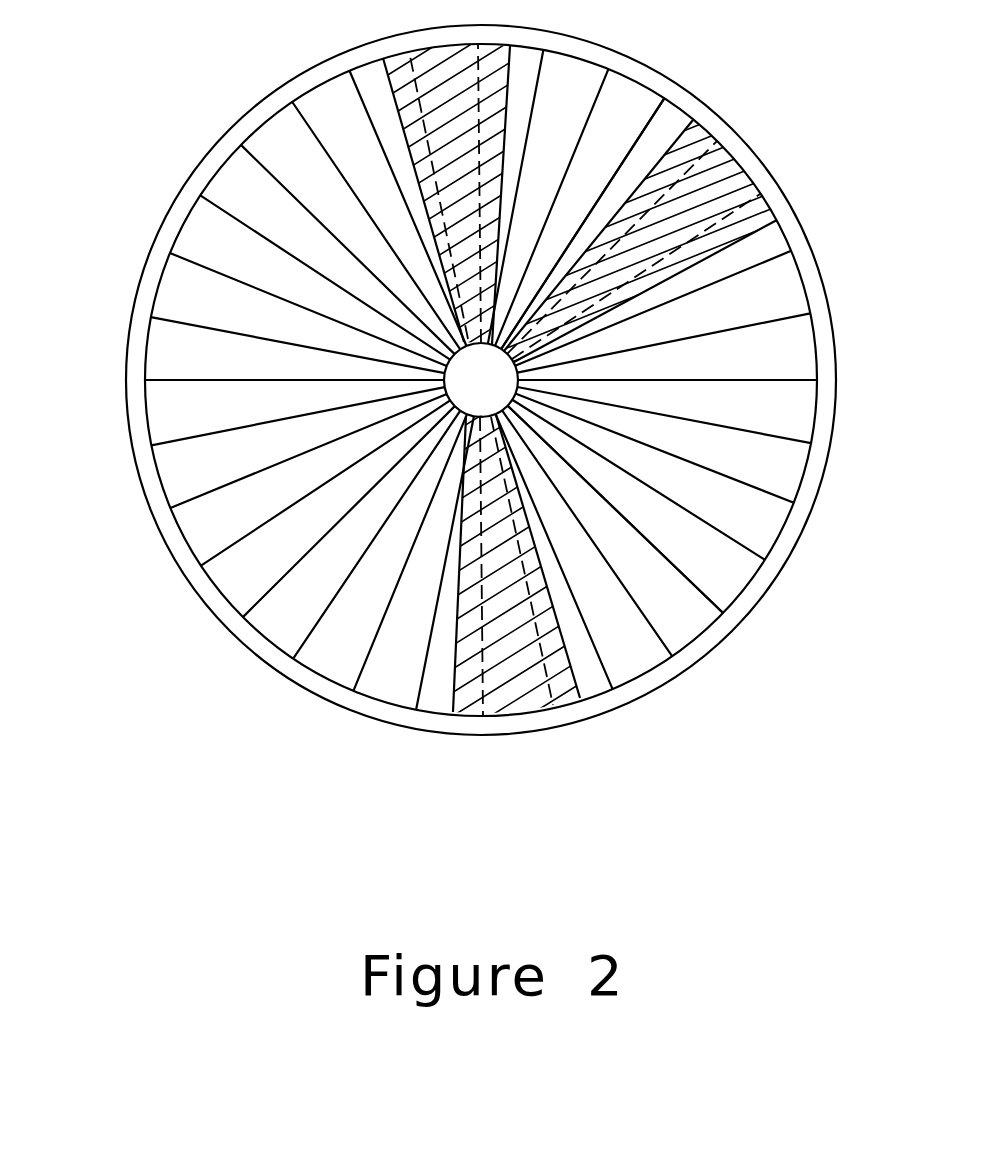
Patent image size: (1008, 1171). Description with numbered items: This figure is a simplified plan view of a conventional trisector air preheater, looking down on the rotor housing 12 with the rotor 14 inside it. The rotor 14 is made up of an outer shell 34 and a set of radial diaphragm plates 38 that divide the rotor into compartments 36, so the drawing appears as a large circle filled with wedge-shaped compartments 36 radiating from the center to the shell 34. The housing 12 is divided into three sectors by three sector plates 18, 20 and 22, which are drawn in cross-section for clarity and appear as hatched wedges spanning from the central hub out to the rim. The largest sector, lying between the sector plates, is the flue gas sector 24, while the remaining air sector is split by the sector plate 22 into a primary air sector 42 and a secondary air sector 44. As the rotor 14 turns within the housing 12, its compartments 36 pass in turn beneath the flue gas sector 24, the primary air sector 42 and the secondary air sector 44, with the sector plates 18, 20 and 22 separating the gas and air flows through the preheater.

The rotor housing 12 is at (130, 340).
The rotor 14 is at (788, 532).
The sector plate 18 is at (523, 697).
The sector plate 20 is at (435, 55).
The sector plate 22 is at (722, 183).
The flue gas sector 24 is at (190, 293).
The shell 34 is at (805, 475).
The compartments 36 is at (783, 347).
The diaphragm plates 38 is at (782, 437).
The primary air sector 42 is at (627, 107).
The secondary air sector 44 is at (727, 580).